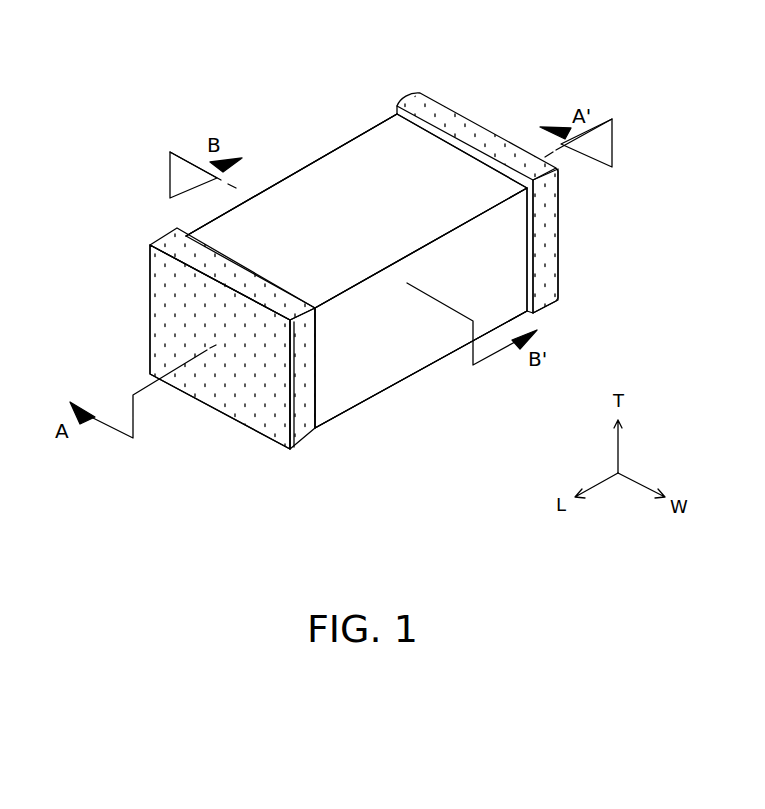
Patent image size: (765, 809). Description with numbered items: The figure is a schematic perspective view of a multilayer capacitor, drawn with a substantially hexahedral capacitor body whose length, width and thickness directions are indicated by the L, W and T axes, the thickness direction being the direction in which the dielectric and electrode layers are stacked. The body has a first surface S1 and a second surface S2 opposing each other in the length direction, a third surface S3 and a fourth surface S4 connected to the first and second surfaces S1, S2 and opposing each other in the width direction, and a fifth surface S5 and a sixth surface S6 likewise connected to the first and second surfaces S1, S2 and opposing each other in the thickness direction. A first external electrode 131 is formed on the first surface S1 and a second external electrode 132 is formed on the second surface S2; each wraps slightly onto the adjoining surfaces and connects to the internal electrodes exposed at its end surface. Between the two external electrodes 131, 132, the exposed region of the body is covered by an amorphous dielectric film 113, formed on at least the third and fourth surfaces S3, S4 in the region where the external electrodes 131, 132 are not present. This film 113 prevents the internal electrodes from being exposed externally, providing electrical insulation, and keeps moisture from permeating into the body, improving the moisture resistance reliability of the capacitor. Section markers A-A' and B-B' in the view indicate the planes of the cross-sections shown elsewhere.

The amorphous dielectric film 113 is at (368, 153).
The first external electrode 131 is at (312, 437).
The second external electrode 132 is at (547, 302).
The first surface S1 is at (233, 399).
The second surface S2 is at (486, 110).
The third surface S3 is at (316, 142).
The fourth surface S4 is at (421, 337).
The fifth surface S5 is at (385, 171).
The sixth surface S6 is at (369, 393).